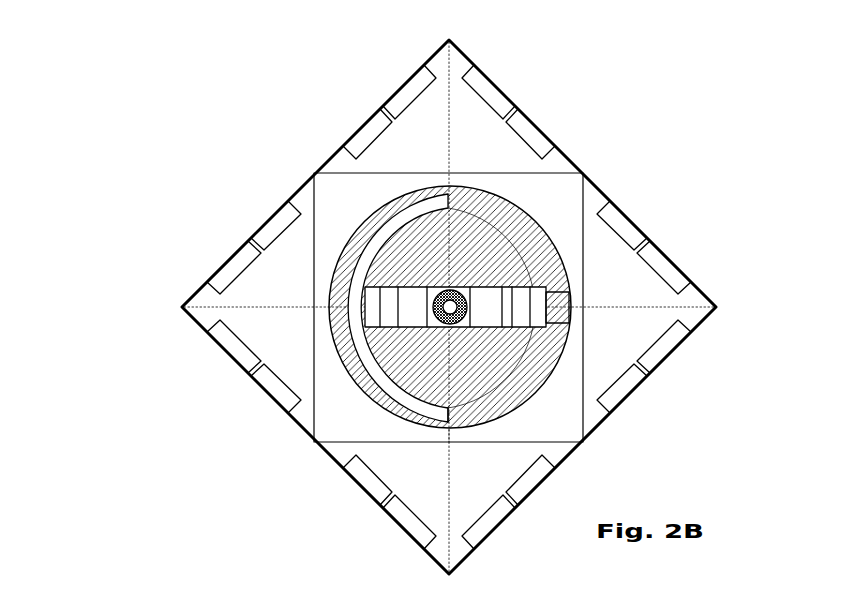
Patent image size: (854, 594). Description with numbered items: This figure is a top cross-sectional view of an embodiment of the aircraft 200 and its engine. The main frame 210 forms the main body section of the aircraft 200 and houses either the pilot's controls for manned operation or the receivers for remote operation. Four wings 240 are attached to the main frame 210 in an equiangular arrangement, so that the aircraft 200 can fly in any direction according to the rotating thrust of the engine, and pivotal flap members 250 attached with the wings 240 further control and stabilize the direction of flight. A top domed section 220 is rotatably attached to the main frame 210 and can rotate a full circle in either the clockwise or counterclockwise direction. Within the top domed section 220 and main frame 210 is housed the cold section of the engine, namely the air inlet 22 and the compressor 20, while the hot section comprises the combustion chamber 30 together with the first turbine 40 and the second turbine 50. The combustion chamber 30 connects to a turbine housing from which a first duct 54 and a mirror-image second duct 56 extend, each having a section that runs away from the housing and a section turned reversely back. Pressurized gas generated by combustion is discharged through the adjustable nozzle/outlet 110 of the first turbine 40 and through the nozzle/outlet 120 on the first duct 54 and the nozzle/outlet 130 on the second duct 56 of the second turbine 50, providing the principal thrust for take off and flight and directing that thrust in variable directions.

The aircraft 200 is at (200, 392).
The wings 240 is at (181, 310).
The pivotal flap members 250 is at (400, 97).
The main frame 210 is at (580, 440).
The top domed section 220 is at (500, 205).
The nozzle/outlet 130 is at (468, 198).
The second duct 56 is at (394, 213).
The first duct 54 is at (416, 412).
The compressor 20 is at (490, 311).
The nozzle/outlet 110 is at (557, 304).
The second turbine 50 is at (388, 285).
The air inlet 22 is at (442, 331).
The first turbine 40 is at (517, 330).
The combustion chamber 30 is at (458, 330).
The nozzle/outlet 120 is at (480, 432).